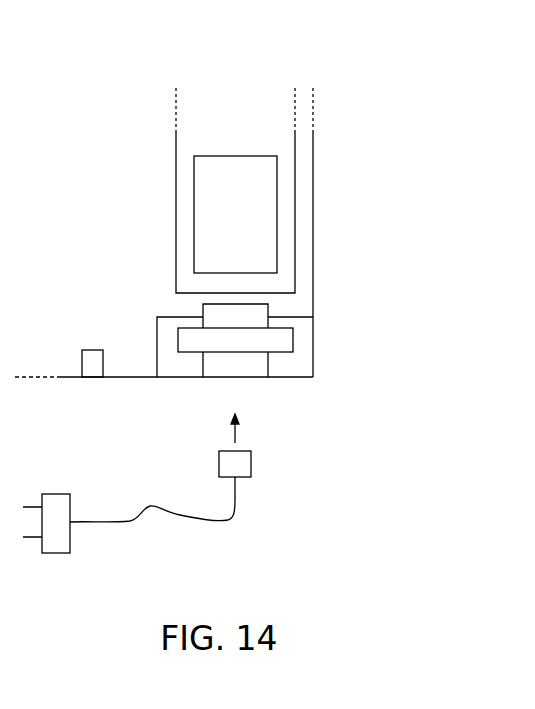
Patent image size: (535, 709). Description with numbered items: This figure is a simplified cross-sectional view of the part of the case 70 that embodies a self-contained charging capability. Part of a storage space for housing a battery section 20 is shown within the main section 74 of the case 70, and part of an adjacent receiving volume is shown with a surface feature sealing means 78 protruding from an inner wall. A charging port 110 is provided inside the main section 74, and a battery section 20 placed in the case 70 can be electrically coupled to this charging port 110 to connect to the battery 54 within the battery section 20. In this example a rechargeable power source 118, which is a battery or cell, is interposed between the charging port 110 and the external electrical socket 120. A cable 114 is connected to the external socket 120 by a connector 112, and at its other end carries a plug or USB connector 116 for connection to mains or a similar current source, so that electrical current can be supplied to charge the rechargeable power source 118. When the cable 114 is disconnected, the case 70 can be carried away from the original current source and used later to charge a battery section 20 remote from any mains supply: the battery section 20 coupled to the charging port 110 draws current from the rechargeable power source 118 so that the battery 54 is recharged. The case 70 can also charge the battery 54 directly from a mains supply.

The battery section 20 is at (218, 135).
The battery 54 is at (218, 232).
The case 70 is at (336, 133).
The main section 74 is at (313, 238).
The surface feature sealing means 78 is at (86, 350).
The charging port 110 is at (262, 311).
The connector 112 is at (251, 463).
The cable 114 is at (135, 523).
The USB connector 116 is at (53, 553).
The rechargeable power source 118 is at (283, 340).
The external electrical socket 120 is at (250, 378).